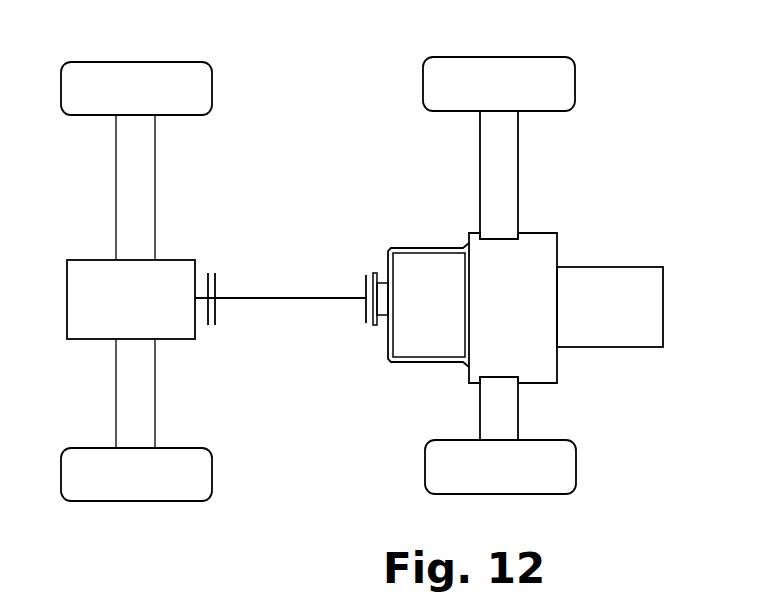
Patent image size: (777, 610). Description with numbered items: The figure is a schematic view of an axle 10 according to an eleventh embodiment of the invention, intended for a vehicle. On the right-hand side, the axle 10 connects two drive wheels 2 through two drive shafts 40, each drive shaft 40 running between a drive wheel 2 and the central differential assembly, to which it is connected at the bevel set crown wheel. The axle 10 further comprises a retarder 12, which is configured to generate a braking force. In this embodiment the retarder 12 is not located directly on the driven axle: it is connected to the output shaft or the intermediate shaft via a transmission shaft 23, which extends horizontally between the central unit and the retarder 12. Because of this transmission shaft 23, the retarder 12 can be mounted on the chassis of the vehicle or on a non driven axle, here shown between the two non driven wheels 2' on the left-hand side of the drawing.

The drive wheel 2 is at (524, 276).
The non driven wheel 2' is at (164, 283).
The axle 10 is at (207, 186).
The retarder 12 is at (89, 276).
The transmission shaft 23 is at (283, 297).
The drive shaft 40 is at (518, 147).